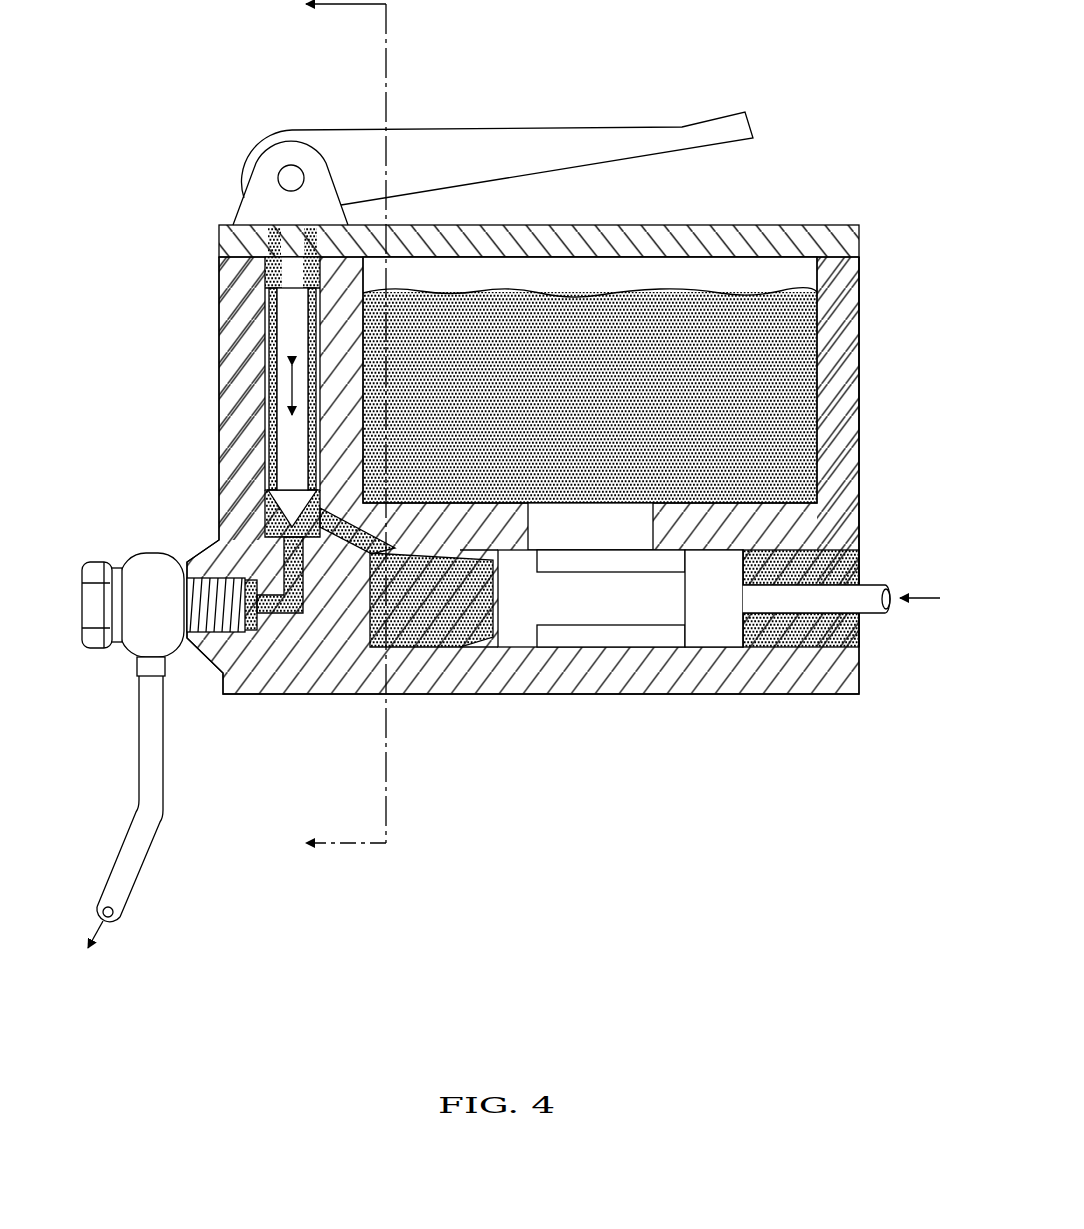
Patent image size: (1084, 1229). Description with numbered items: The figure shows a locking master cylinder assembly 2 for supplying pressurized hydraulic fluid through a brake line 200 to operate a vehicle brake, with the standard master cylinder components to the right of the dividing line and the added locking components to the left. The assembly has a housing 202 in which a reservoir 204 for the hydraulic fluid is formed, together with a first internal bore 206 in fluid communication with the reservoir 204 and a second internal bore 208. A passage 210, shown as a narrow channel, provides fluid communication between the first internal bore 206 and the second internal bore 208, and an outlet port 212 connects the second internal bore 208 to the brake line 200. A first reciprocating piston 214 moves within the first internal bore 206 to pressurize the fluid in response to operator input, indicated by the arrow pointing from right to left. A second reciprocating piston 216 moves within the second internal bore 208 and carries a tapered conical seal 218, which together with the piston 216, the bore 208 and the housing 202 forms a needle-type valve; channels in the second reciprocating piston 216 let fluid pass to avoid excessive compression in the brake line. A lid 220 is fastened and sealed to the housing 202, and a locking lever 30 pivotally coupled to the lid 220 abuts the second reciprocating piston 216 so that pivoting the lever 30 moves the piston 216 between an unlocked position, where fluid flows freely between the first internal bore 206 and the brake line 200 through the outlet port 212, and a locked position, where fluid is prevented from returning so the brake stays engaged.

The locking master cylinder assembly 2 is at (204, 134).
The locking lever 30 is at (600, 127).
The brake line 200 is at (139, 757).
The housing 202 is at (859, 272).
The reservoir 204 is at (818, 430).
The first internal bore 206 is at (513, 648).
The second internal bore 208 is at (265, 450).
The passage 210 is at (343, 545).
The outlet port 212 is at (280, 556).
The first reciprocating piston 214 is at (708, 628).
The second reciprocating piston 216 is at (290, 390).
The tapered conical seal 218 is at (290, 508).
The lid 220 is at (822, 225).